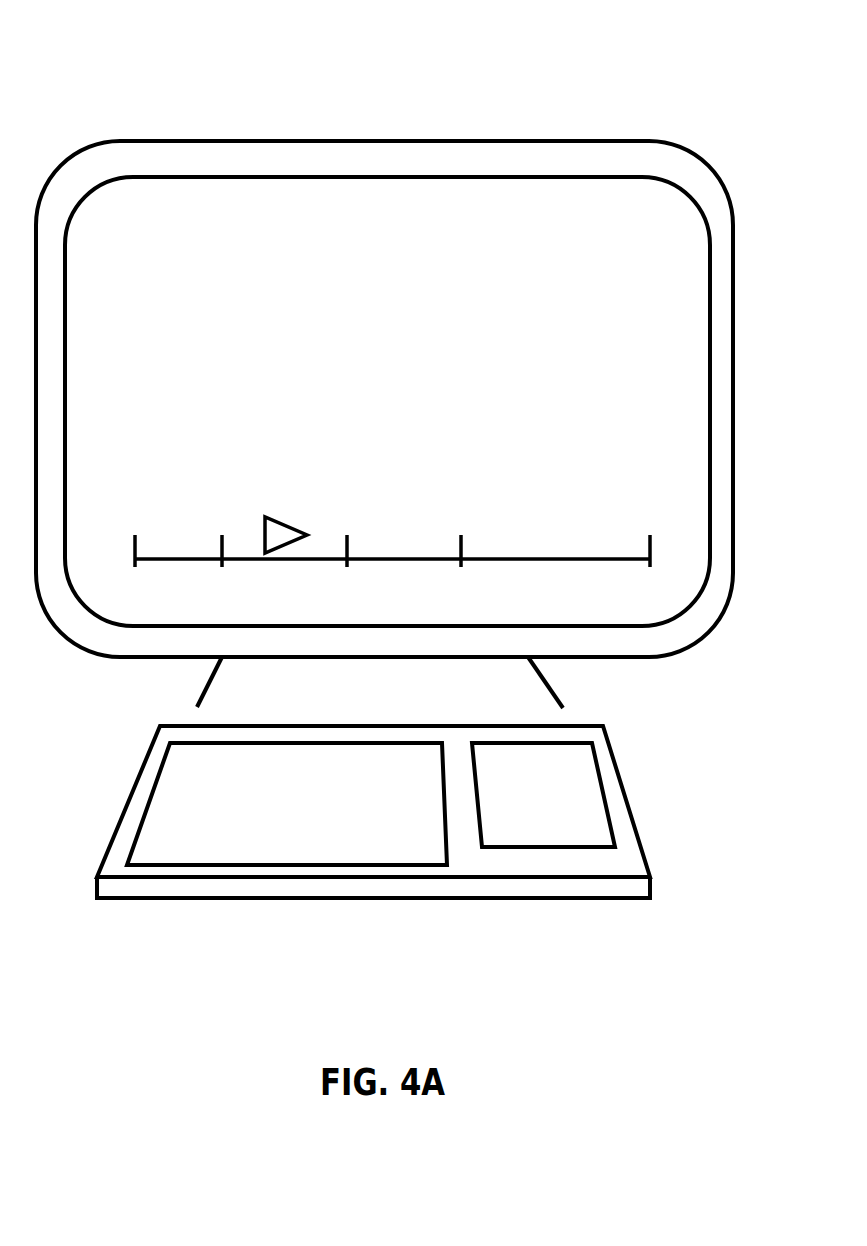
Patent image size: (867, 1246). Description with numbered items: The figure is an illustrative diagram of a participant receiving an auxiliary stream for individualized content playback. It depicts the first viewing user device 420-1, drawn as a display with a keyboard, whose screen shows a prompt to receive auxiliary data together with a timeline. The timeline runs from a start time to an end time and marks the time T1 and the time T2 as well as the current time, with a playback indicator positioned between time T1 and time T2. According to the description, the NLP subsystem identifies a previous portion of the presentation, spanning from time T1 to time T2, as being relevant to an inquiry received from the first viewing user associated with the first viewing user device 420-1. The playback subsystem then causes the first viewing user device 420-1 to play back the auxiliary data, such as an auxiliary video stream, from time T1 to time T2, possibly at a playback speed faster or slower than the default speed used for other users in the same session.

The first viewing user device 420-1 is at (488, 132).
The time T1 is at (219, 516).
The time T2 is at (345, 516).